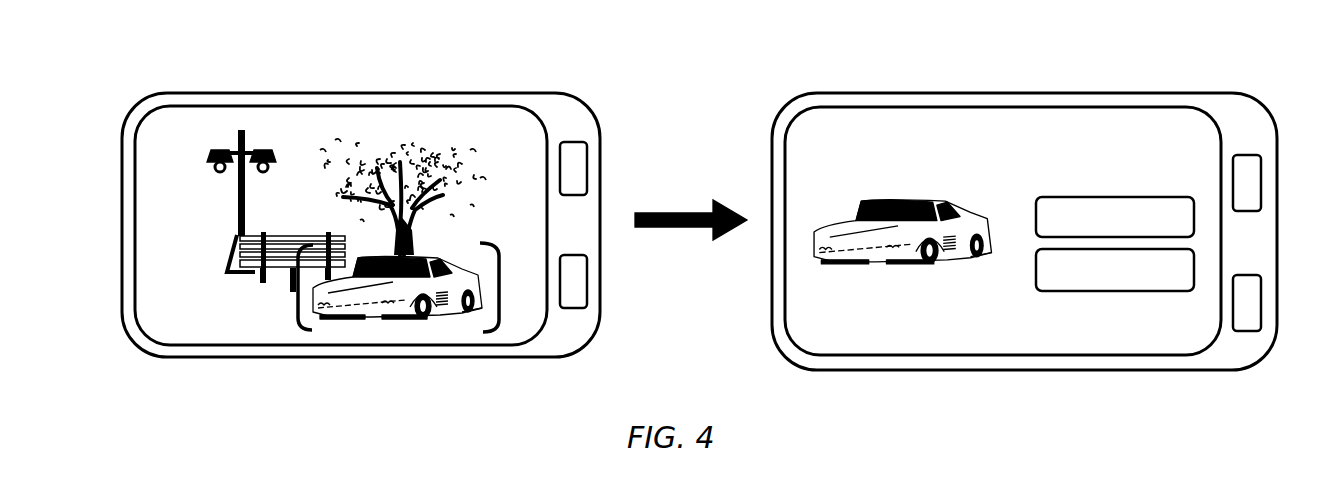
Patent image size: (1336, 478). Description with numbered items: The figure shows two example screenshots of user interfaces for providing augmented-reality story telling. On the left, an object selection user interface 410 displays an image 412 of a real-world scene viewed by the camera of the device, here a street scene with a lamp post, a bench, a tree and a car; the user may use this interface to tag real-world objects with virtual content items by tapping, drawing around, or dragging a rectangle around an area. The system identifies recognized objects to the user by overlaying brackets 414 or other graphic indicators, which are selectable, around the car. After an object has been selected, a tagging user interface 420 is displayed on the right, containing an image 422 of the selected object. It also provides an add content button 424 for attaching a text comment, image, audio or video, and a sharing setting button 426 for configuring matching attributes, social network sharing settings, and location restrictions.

The object selection user interface 410 is at (383, 399).
The captured image / scene 412 is at (150, 168).
The brackets 414 is at (483, 332).
The tagging user interface 420 is at (1085, 413).
The image of the object 422 is at (910, 182).
The add content button 424 is at (1147, 195).
The sharing setting button 426 is at (1122, 291).